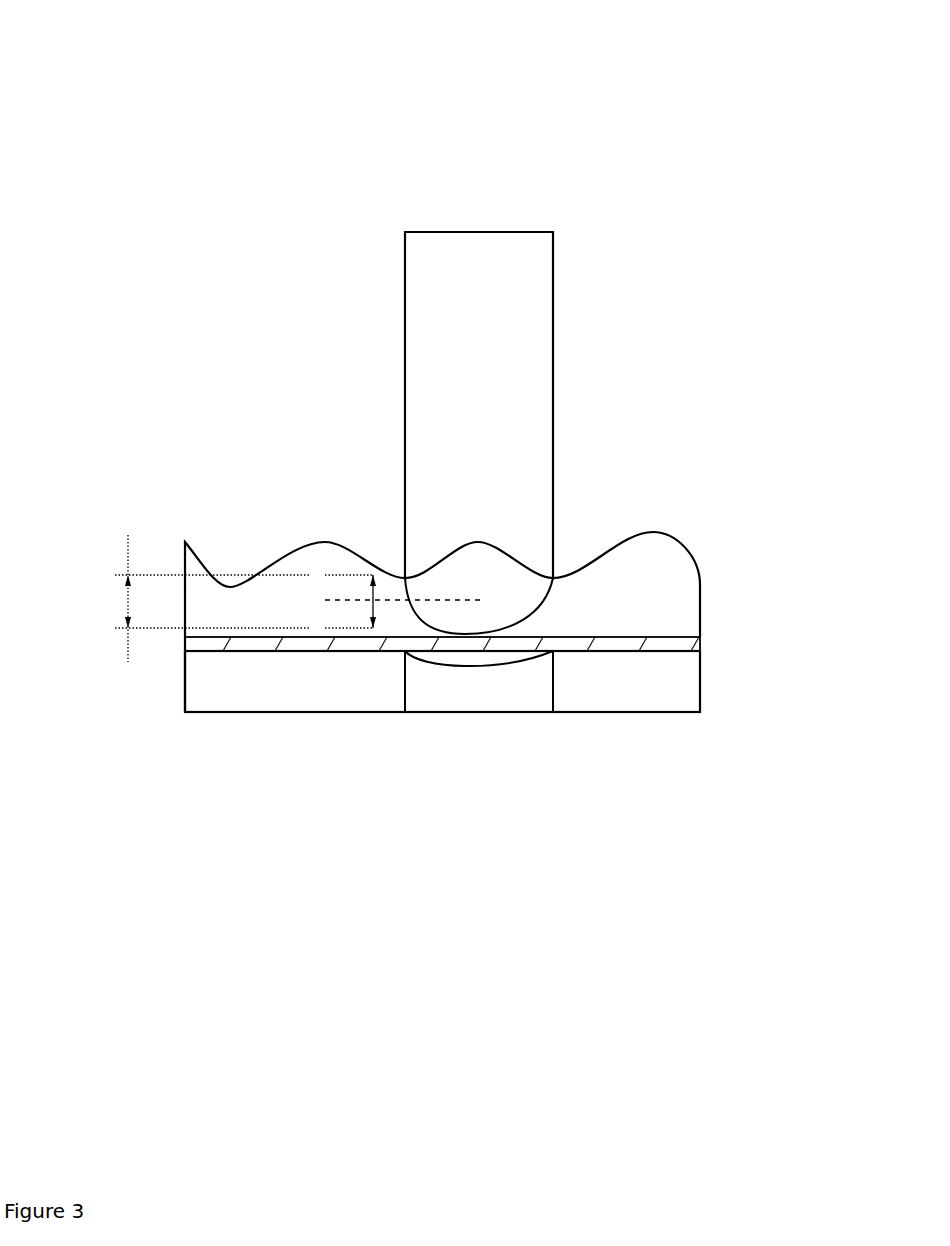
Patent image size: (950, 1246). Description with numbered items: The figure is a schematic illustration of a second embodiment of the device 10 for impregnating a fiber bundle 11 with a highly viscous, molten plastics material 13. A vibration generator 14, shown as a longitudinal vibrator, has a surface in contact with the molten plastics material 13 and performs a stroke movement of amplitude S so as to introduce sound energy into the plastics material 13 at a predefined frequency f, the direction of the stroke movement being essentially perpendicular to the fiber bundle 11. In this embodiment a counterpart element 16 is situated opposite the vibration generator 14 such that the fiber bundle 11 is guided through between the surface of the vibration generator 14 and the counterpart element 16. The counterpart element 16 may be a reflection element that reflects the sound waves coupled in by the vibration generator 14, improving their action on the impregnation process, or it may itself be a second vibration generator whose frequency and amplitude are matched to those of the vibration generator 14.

The device 10 is at (82, 49).
The fiber bundle 11 is at (568, 644).
The plastics material 13 is at (647, 563).
The vibration generator 14 is at (556, 264).
The counterpart element 16 is at (485, 670).
The frequency f is at (364, 593).
The amplitude S is at (235, 598).